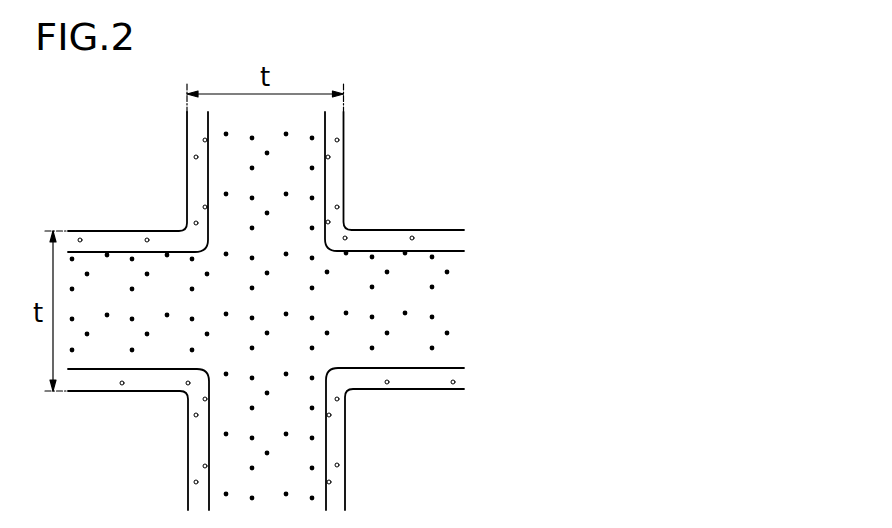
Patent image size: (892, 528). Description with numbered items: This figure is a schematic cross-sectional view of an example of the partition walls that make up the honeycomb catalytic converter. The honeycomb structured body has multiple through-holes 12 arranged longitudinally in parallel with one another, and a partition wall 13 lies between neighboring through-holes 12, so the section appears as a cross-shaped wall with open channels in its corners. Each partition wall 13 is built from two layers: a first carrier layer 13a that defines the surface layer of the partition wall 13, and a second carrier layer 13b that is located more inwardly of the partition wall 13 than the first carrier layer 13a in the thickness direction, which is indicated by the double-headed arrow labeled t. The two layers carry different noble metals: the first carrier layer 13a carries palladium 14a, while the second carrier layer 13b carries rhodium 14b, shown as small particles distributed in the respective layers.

The through-hole 12 is at (400, 168).
The partition wall 13 is at (577, 212).
The first carrier layer 13a is at (447, 240).
The second carrier layer 13b is at (423, 308).
The palladium 14a is at (453, 382).
The rhodium 14b is at (313, 438).